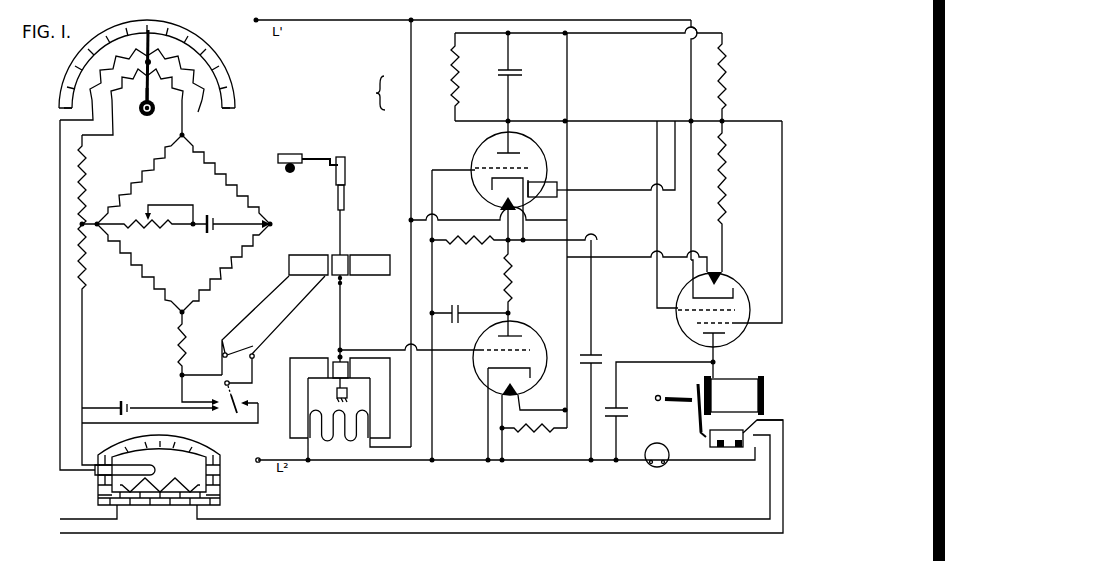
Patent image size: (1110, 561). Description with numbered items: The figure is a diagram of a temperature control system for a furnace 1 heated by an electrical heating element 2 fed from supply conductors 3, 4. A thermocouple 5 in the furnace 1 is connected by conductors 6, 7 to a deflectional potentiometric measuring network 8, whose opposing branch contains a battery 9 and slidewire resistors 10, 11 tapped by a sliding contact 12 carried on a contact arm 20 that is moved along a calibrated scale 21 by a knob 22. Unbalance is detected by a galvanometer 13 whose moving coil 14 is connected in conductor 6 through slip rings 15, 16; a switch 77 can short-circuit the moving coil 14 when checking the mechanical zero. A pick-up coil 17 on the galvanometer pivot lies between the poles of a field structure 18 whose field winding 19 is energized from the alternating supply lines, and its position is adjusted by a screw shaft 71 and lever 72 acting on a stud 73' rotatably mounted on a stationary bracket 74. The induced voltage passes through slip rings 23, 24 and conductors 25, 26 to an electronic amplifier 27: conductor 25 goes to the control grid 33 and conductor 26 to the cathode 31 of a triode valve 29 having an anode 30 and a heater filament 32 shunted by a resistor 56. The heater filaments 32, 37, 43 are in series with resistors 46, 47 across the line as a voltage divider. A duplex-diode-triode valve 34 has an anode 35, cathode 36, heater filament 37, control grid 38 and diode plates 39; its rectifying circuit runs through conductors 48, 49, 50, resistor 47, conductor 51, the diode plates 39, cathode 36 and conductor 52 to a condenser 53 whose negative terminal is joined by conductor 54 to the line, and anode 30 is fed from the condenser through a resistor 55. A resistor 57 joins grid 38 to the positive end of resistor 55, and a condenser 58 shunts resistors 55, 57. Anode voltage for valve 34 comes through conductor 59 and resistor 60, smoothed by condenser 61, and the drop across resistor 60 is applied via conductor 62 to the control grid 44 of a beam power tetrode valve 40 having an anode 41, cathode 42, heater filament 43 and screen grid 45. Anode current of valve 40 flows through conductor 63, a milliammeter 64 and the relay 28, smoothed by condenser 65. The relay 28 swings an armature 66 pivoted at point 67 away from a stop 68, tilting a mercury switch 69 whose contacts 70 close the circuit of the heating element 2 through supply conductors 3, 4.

The furnace 1 is at (222, 488).
The electrical heating element 2 is at (160, 490).
The supply conductor 3 is at (78, 519).
The supply conductor 4 is at (90, 533).
The thermocouple 5 is at (115, 468).
The conductor 6 is at (245, 428).
The conductor 7 is at (58, 403).
The deflectional potentiometric measuring network 8 is at (220, 158).
The battery 9 is at (209, 232).
The slidewire resistor 10 is at (167, 100).
The slidewire resistor 11 is at (198, 112).
The sliding contact 12 is at (168, 50).
The galvanometer 13 is at (317, 219).
The moving coil 14 is at (342, 262).
The slip ring 15 is at (344, 278).
The slip ring 16 is at (344, 284).
The pick-up coil 17 is at (333, 364).
The field structure 18 is at (292, 390).
The field winding 19 is at (362, 442).
The contact arm 20 is at (146, 90).
The calibrated scale 21 is at (231, 73).
The knob 22 is at (146, 117).
The slip ring 23 is at (338, 353).
The slip ring 24 is at (343, 348).
The conductor 25 is at (452, 350).
The conductor 26 is at (433, 412).
The electronic amplifier 27 is at (369, 93).
The relay 28 is at (735, 390).
The electronic valve 29 is at (486, 370).
The anode 30 is at (516, 330).
The cathode 31 is at (487, 376).
The heater filament 32 is at (519, 390).
The control grid 33 is at (526, 346).
The electronic valve 34 is at (540, 152).
The anode 35 is at (495, 152).
The cathode 36 is at (490, 178).
The heater filament 37 is at (500, 205).
The control grid 38 is at (476, 167).
The diode plates 39 is at (530, 200).
The electronic valve 40 is at (690, 285).
The anode 41 is at (700, 340).
The cathode 42 is at (748, 290).
The heater filament 43 is at (722, 278).
The control grid 44 is at (738, 310).
The screen grid 45 is at (697, 323).
The resistor 46 is at (727, 165).
The resistor 47 is at (727, 85).
The conductor 48 is at (409, 55).
The conductor 49 is at (470, 220).
The conductor 50 is at (570, 196).
The conductor 51 is at (625, 190).
The conductor 52 is at (582, 252).
The condenser 53 is at (594, 350).
The conductor 54 is at (576, 438).
The resistor 55 is at (512, 285).
The resistor 56 is at (556, 432).
The resistor 57 is at (468, 244).
The condenser 58 is at (456, 306).
The conductor 59 is at (548, 36).
The resistor 60 is at (452, 78).
The condenser 61 is at (500, 70).
The conductor 62 is at (625, 121).
The conductor 63 is at (716, 370).
The milliammeter 64 is at (655, 466).
The condenser 65 is at (620, 410).
The armature 66 is at (697, 408).
The pivot point 67 is at (700, 433).
The stop 68 is at (695, 385).
The mercury switch 69 is at (710, 442).
The contacts 70 is at (745, 446).
The screw shaft 71 is at (290, 173).
The lever 72 is at (285, 155).
The stud 73' is at (351, 159).
The stationary bracket 74 is at (345, 198).
The switch 77 is at (237, 350).